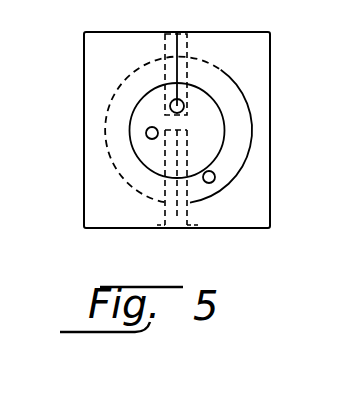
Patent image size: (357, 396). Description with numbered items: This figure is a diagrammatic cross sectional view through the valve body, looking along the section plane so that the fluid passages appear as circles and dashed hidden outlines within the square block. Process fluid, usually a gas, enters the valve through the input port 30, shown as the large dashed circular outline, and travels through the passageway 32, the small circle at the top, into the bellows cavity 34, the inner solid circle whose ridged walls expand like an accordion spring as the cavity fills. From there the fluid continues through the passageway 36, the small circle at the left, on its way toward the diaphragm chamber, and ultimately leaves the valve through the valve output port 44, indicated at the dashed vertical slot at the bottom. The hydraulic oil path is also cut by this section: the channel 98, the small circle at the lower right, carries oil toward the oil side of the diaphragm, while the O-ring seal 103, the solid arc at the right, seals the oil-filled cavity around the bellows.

The input port 30 is at (190, 55).
The passageway 32 is at (170, 105).
The bellows cavity 34 is at (225, 122).
The passageway 36 is at (146, 133).
The valve output port 44 is at (182, 229).
The channel 98 is at (215, 177).
The O-ring seal 103 is at (222, 193).